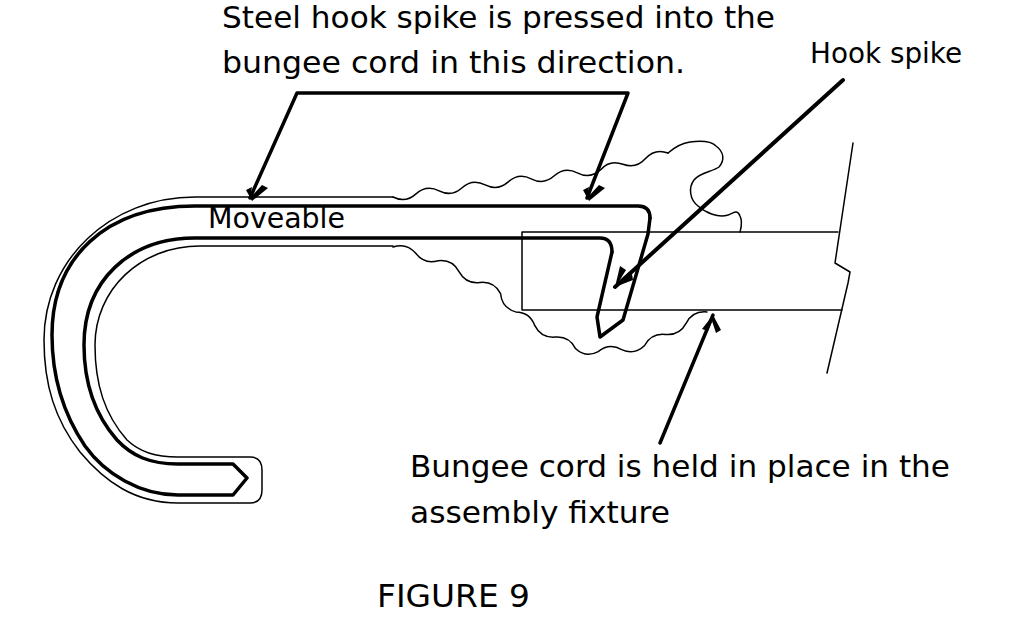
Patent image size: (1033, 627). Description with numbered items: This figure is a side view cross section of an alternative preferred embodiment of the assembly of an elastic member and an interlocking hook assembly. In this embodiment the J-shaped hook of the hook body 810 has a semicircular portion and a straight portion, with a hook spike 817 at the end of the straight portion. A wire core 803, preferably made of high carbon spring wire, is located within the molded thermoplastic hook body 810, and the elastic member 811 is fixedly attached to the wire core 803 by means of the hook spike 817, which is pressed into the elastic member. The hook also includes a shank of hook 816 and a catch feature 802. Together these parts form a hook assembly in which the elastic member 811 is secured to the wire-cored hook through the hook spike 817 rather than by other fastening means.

The catch feature 802 is at (737, 210).
The wire core 803 is at (192, 483).
The hook body 810 is at (643, 180).
The elastic member 811 is at (778, 310).
The shank of hook 816 is at (370, 223).
The hook spike 817 is at (612, 298).